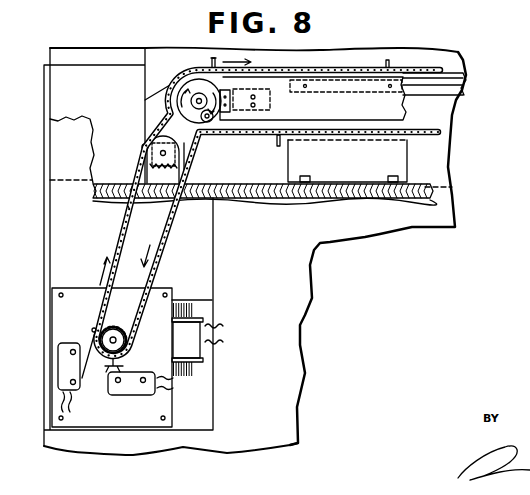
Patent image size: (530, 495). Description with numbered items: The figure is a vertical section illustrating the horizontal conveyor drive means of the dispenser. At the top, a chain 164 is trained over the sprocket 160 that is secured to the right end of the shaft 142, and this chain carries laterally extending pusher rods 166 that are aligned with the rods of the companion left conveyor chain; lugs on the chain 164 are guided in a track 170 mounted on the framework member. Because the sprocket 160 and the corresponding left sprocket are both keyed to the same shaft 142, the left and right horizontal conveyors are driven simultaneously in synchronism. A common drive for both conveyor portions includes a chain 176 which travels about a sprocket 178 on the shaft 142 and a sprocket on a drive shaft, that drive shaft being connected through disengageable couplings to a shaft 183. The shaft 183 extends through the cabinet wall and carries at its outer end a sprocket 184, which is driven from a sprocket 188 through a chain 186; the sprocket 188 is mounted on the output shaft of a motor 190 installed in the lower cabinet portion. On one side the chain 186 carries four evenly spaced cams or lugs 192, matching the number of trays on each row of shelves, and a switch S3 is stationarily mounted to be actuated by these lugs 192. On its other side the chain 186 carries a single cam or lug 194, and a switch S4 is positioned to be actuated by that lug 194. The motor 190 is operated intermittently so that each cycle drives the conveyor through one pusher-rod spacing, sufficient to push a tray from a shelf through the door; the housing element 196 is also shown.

The shaft 142 is at (200, 78).
The sprocket 160 is at (193, 85).
The chain 164 is at (283, 70).
The pusher rods 166 is at (388, 62).
The track 170 is at (458, 93).
The chain 176 is at (185, 143).
The sprocket 178 is at (212, 121).
The shaft 183 is at (142, 146).
The sprocket 184 is at (158, 155).
The chain 186 is at (127, 208).
The sprocket 188 is at (120, 326).
The motor 190 is at (200, 350).
The cams or lugs 192 is at (162, 120).
The cam or lug 194 is at (90, 330).
The housing cover 196 is at (408, 158).
The switch S3 is at (138, 394).
The switch S4 is at (60, 368).